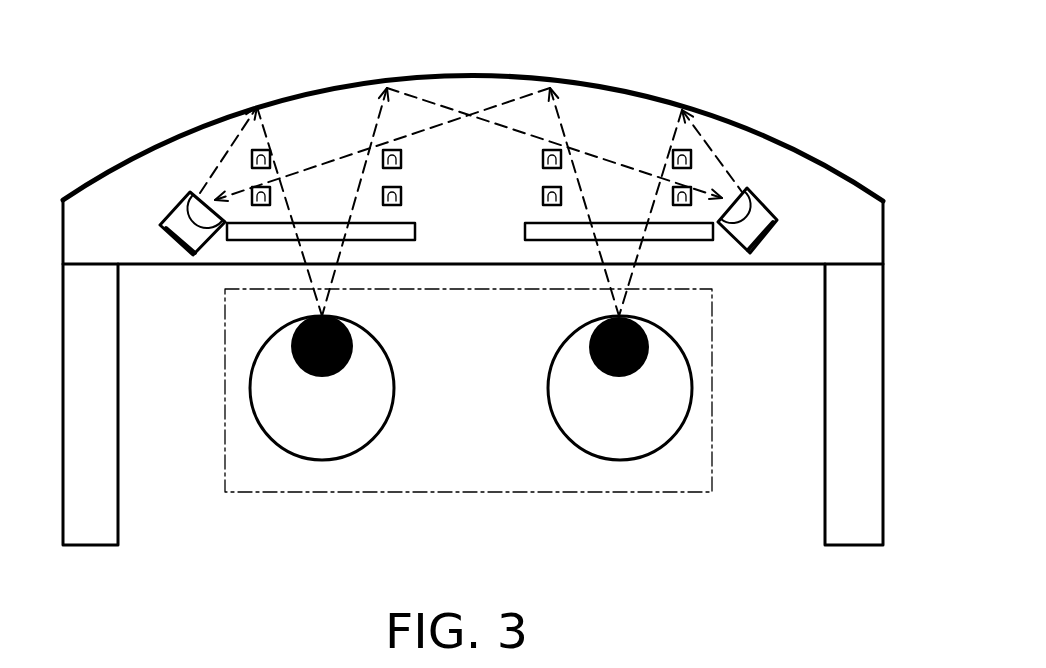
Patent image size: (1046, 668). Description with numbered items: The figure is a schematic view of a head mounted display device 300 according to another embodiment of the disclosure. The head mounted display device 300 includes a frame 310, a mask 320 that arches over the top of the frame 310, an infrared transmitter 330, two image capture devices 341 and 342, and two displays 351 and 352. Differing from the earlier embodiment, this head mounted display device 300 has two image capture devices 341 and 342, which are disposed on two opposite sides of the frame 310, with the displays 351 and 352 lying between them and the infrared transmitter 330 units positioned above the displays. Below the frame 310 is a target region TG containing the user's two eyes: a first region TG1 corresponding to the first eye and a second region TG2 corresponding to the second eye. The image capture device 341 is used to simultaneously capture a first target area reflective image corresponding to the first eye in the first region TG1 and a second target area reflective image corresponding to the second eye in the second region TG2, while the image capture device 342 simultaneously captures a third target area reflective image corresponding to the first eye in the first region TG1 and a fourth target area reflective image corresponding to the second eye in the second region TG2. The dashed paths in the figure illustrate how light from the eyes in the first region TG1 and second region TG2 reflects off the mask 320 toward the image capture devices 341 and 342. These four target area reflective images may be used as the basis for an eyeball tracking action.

The head mounted display device 300 is at (503, 312).
The frame 310 is at (878, 239).
The mask 320 is at (658, 96).
The infrared transmitter 330 is at (272, 188).
The image capture device 341 is at (172, 239).
The image capture device 342 is at (769, 237).
The display 351 is at (416, 235).
The display 352 is at (525, 232).
The target region TG is at (668, 494).
The first region TG1 is at (262, 445).
The second region TG2 is at (558, 447).